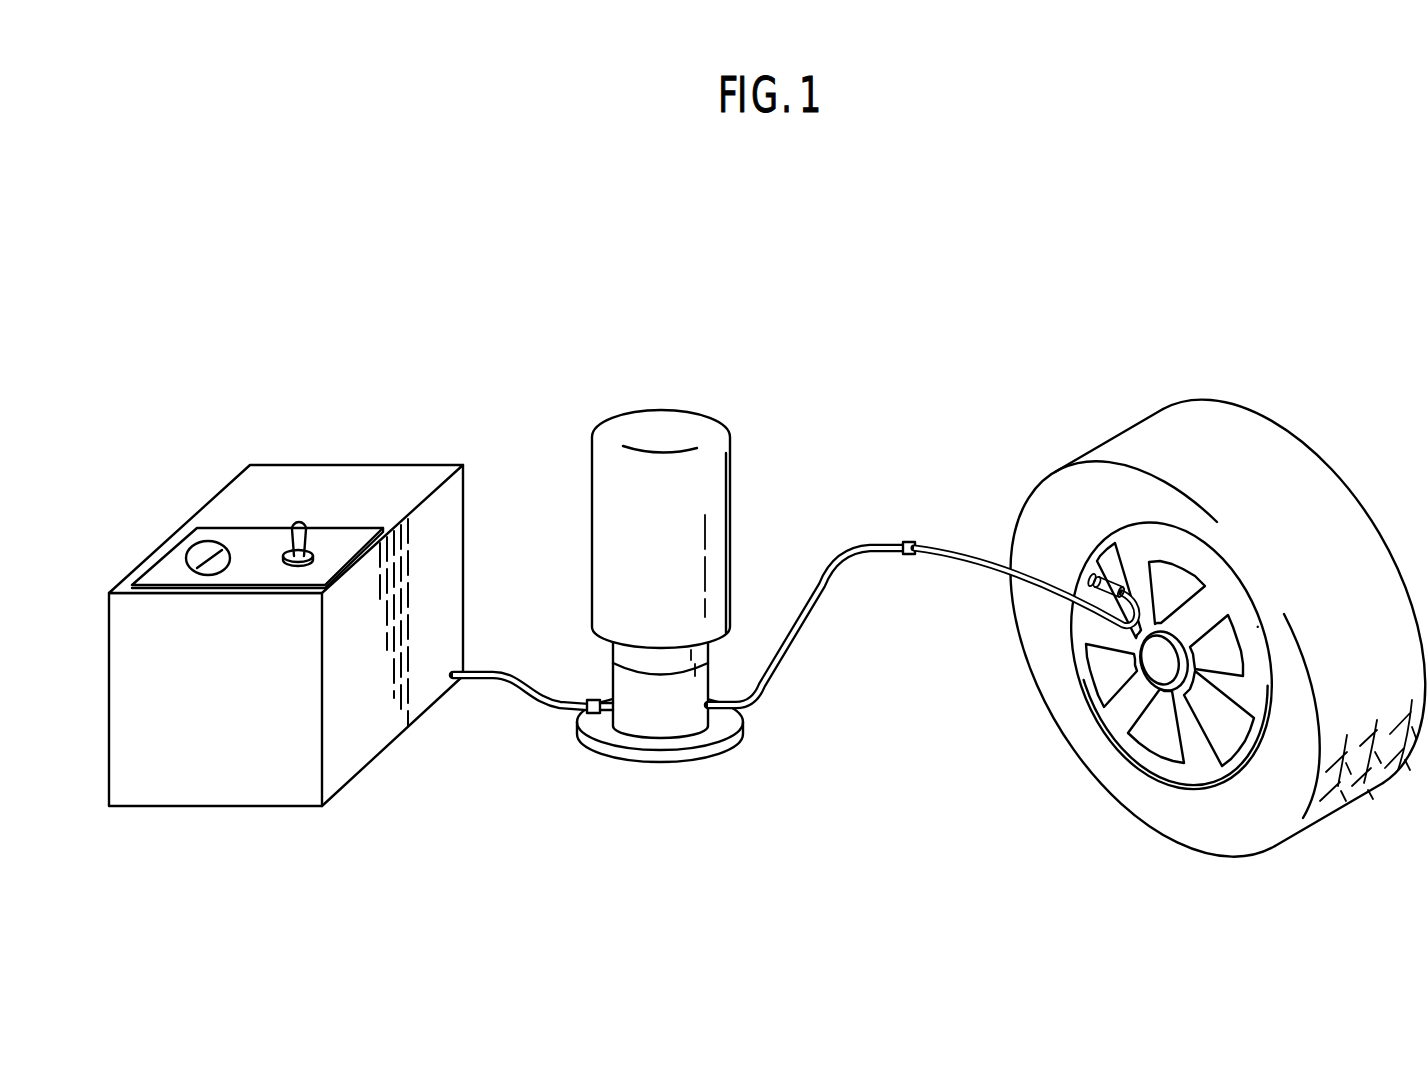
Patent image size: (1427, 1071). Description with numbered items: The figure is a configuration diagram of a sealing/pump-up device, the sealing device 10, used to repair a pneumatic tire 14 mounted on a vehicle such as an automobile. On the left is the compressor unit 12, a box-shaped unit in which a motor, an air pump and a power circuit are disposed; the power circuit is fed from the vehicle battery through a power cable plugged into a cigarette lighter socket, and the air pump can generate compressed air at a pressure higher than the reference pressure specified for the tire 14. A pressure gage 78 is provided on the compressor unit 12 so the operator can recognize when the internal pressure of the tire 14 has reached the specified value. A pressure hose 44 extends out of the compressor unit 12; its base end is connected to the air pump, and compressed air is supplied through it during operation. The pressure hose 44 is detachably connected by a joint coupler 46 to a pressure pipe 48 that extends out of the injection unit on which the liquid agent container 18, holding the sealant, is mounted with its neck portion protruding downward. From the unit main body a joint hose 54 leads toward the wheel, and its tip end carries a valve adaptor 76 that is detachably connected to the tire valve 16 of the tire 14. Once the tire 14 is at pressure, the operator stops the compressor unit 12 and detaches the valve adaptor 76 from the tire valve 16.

The sealing device 10 is at (476, 328).
The compressor unit 12 is at (286, 586).
The tire 14 is at (1338, 463).
The tire valve 16 is at (1092, 575).
The liquid agent container 18 is at (703, 411).
The pressure hose 44 is at (483, 685).
The joint coupler 46 is at (589, 699).
The pressure pipe 48 is at (607, 750).
The joint hose 54 is at (808, 568).
The valve adaptor 76 is at (1128, 586).
The pressure gage 78 is at (198, 547).